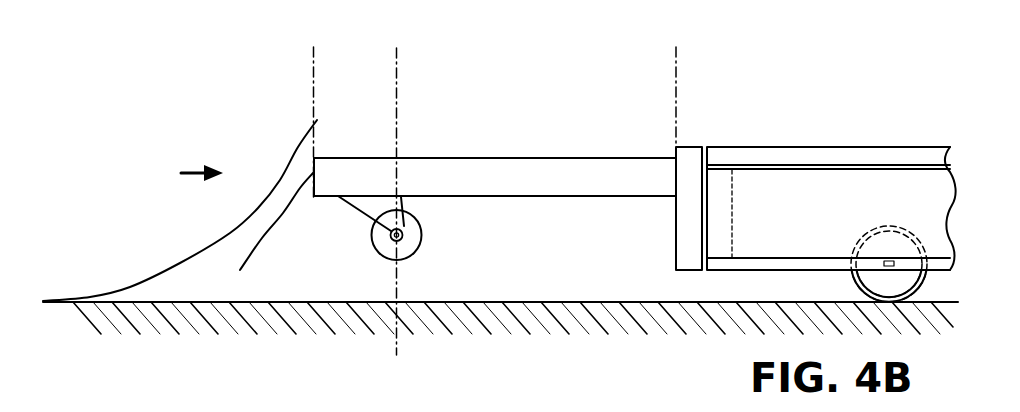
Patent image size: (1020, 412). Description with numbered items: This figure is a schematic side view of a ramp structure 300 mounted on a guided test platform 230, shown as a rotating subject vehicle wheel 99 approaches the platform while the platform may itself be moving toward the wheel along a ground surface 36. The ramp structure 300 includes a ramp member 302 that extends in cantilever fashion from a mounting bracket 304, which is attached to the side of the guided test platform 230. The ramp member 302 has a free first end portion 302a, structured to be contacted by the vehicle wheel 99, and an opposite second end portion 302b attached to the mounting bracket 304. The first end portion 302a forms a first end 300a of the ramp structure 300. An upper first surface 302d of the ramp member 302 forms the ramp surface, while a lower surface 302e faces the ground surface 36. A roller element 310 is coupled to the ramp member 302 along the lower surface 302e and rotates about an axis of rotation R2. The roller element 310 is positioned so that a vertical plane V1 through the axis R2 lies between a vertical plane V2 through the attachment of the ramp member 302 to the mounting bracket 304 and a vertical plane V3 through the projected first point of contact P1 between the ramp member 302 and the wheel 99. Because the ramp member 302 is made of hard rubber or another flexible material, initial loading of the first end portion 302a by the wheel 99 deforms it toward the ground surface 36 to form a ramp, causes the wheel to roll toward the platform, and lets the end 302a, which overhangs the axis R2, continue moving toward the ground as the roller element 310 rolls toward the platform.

The ground surface 36 is at (305, 302).
The subject vehicle wheel 99 is at (270, 191).
The first end of the ramp structure 300a is at (252, 230).
The projected first point of contact P1 is at (313, 155).
The vertical plane through roller axis V1 is at (394, 213).
The vertical plane through attachment location V2 is at (675, 85).
The vertical plane through first point of contact V3 is at (311, 110).
The ramp structure 300 is at (598, 128).
The ramp member 302 is at (474, 182).
The first end portion of ramp member 302a is at (317, 177).
The second end portion of ramp member 302b is at (660, 182).
The first surface of ramp member 302d is at (477, 157).
The lower surface of ramp member 302e is at (520, 198).
The mounting bracket 304 is at (688, 160).
The roller element 310 is at (410, 245).
The axis of rotation of roller element R2 is at (403, 233).
The guided test platform 230 is at (826, 130).